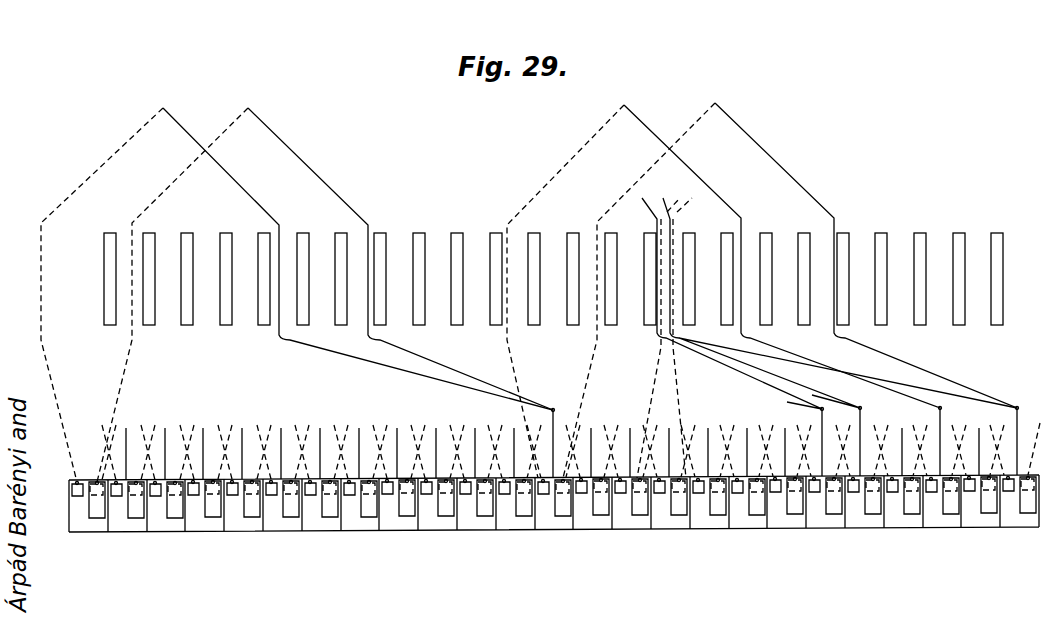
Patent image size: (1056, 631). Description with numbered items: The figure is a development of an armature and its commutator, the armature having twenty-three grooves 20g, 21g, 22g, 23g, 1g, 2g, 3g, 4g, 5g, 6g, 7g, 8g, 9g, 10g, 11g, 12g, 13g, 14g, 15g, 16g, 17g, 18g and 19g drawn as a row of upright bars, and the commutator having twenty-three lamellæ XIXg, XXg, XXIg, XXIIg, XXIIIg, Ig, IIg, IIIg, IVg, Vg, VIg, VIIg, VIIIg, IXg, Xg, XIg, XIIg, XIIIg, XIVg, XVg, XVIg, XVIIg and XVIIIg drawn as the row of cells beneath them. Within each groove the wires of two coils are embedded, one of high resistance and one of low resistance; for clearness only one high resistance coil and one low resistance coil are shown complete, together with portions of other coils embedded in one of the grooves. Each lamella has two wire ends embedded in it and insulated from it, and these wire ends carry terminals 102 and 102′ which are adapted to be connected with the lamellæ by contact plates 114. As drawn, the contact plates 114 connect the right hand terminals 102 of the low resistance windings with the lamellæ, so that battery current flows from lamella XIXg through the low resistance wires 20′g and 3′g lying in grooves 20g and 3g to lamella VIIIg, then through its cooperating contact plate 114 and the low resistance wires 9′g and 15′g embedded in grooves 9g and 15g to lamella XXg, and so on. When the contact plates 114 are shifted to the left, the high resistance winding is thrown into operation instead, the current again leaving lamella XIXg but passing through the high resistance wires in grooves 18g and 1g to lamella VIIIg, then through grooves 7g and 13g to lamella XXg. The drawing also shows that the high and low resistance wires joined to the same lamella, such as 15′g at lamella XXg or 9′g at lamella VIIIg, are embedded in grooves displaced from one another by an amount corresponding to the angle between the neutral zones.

The armature groove 20g is at (124, 279).
The armature groove 21g is at (163, 279).
The armature groove 22g is at (201, 279).
The armature groove 23g is at (240, 279).
The armature groove 1g is at (274, 279).
The armature groove 2g is at (313, 279).
The armature groove 3g is at (351, 279).
The armature groove 4g is at (390, 279).
The armature groove 5g is at (429, 279).
The armature groove 6g is at (467, 279).
The armature groove 7g is at (506, 279).
The armature groove 8g is at (544, 279).
The armature groove 9g is at (583, 279).
The armature groove 10g is at (625, 279).
The armature groove 11g is at (827, 338).
The armature groove 12g is at (703, 279).
The armature groove 13g is at (741, 279).
The armature groove 14g is at (780, 279).
The armature groove 15g is at (818, 279).
The armature groove 16g is at (857, 279).
The armature groove 17g is at (895, 279).
The armature groove 18g is at (934, 279).
The armature groove 19g is at (978, 279).
The low resistance wire 20′g is at (250, 109).
The low resistance wire 3′g is at (372, 226).
The low resistance wire 9′g is at (597, 222).
The low resistance wire 15′g is at (837, 223).
The commutator lamella XIXg is at (92, 530).
The commutator lamella XXg is at (131, 530).
The commutator lamella XXIg is at (170, 530).
The commutator lamella XXIIg is at (208, 529).
The commutator lamella XXIIIg is at (247, 529).
The commutator lamella Ig is at (286, 529).
The commutator lamella IIg is at (325, 529).
The commutator lamella IIIg is at (364, 529).
The commutator lamella IVg is at (402, 528).
The commutator lamella Vg is at (441, 528).
The commutator lamella VIg is at (480, 528).
The commutator lamella VIIg is at (519, 528).
The commutator lamella VIIIg is at (558, 528).
The commutator lamella IXg is at (596, 527).
The commutator lamella Xg is at (635, 527).
The commutator lamella XIg is at (674, 527).
The commutator lamella XIIg is at (713, 527).
The commutator lamella XIIIg is at (752, 527).
The commutator lamella XIVg is at (790, 526).
The commutator lamella XVg is at (829, 526).
The commutator lamella XVIg is at (868, 526).
The commutator lamella XVIIg is at (907, 526).
The commutator lamella XVIIIg is at (946, 526).
The terminal 102 is at (100, 520).
The terminal 102′ is at (72, 500).
The contact plate 114 is at (92, 512).